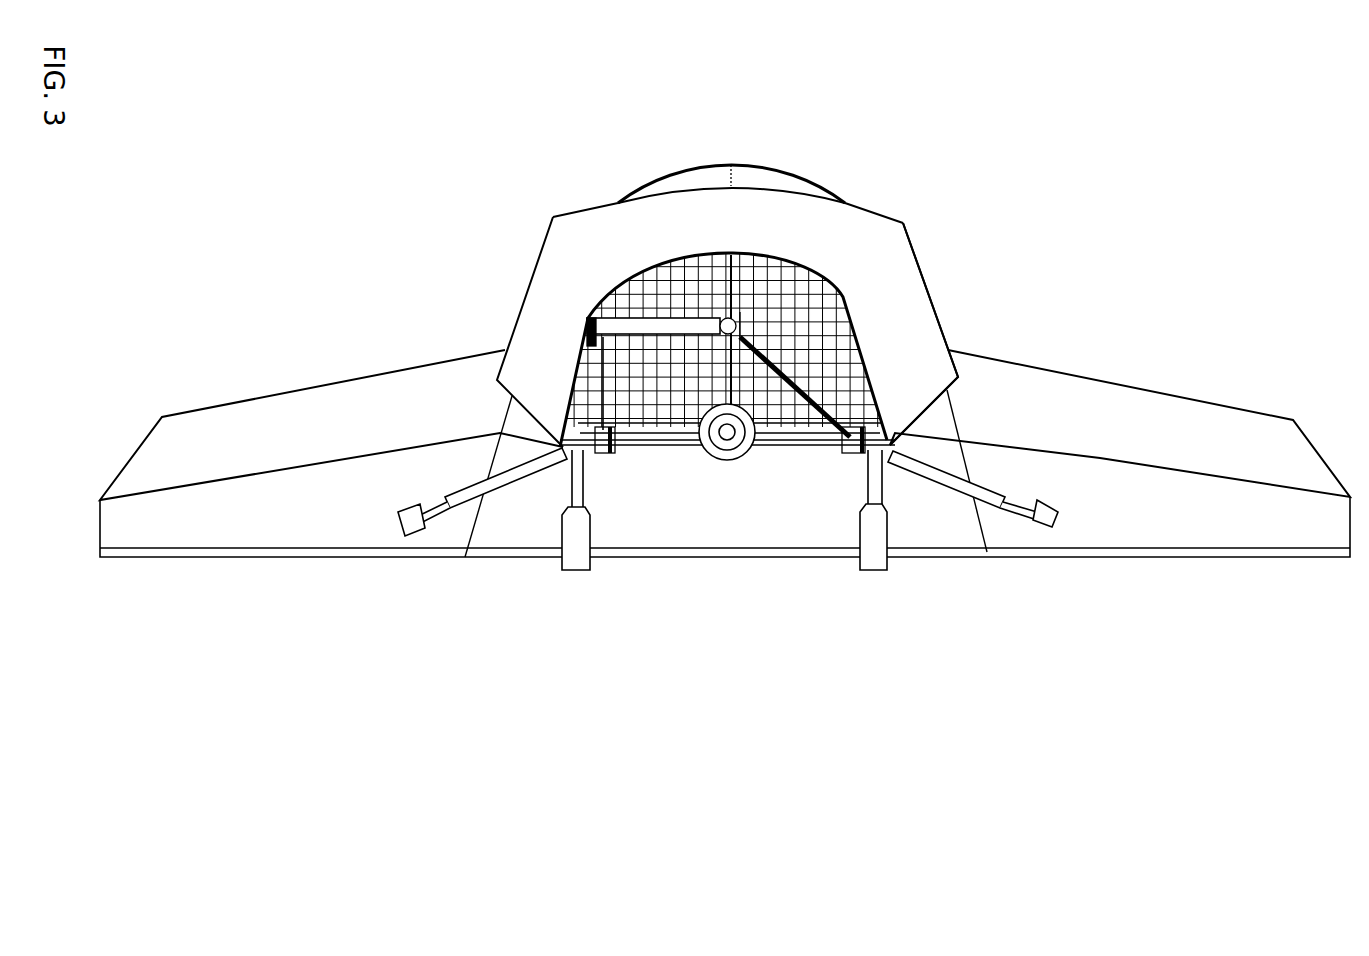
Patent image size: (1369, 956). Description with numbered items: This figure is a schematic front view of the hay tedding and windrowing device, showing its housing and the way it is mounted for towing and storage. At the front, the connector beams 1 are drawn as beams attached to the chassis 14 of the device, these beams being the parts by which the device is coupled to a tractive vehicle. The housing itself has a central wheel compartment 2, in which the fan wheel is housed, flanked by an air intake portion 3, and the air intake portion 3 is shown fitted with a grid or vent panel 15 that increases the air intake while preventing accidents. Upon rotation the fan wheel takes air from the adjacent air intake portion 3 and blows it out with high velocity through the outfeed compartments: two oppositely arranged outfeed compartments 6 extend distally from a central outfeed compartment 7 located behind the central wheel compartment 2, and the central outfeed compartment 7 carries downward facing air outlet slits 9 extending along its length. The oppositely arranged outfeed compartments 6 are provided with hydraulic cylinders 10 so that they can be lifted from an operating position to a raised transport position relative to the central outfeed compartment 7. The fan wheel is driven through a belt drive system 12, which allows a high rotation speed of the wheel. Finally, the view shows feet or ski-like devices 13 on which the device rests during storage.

The connector beams 1 is at (612, 450).
The central wheel compartment 2 is at (755, 177).
The air intake portion 3 is at (873, 300).
The oppositely arranged outfeed compartments 6 is at (327, 433).
The central outfeed compartment 7 is at (883, 270).
The downward facing air outlet slits 9 is at (290, 553).
The hydraulic cylinders 10 is at (460, 500).
The belt drive system 12 is at (745, 455).
The feet or ski-like devices 13 is at (562, 545).
The chassis 14 is at (667, 437).
The grid or vent panel 15 is at (638, 280).